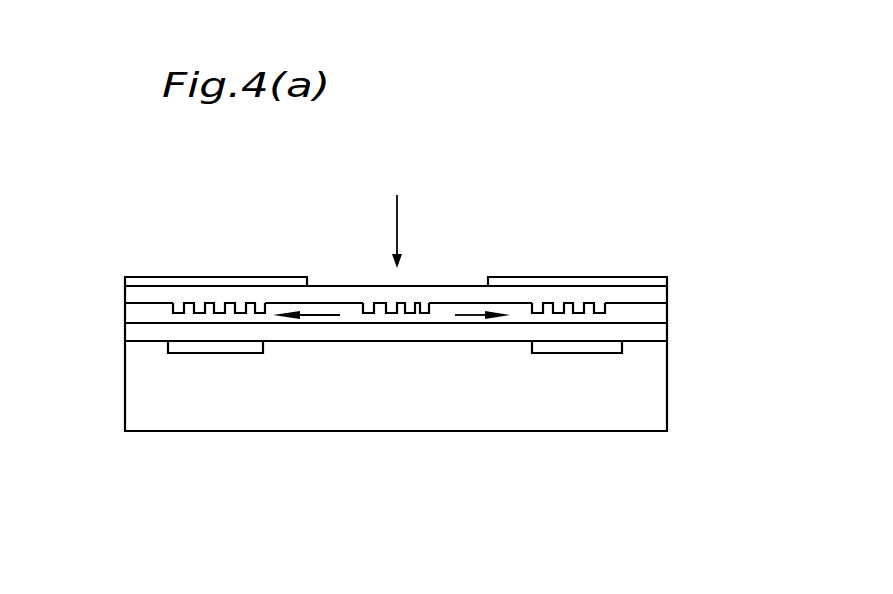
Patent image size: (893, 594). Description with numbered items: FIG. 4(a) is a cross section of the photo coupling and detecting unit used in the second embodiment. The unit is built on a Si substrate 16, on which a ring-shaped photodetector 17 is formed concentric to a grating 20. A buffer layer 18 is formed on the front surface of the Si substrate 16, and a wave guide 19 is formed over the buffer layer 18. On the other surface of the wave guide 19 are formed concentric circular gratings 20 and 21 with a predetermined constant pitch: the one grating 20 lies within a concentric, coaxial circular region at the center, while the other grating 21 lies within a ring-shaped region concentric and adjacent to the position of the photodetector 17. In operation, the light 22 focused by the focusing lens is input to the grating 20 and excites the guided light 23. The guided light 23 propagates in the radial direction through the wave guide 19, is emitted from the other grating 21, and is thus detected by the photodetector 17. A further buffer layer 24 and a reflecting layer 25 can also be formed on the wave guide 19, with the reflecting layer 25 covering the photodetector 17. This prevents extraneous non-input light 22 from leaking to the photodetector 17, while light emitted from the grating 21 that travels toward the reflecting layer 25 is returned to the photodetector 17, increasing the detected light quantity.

The Si substrate 16 is at (598, 412).
The ring-shaped photodetector 17 is at (177, 348).
The buffer layer 18 is at (657, 333).
The wave guide 19 is at (657, 312).
The grating 20 is at (416, 303).
The grating 21 is at (212, 300).
The light 22 is at (397, 203).
The guided light 23 is at (323, 316).
The buffer layer 24 is at (657, 295).
The reflecting layer 25 is at (125, 278).